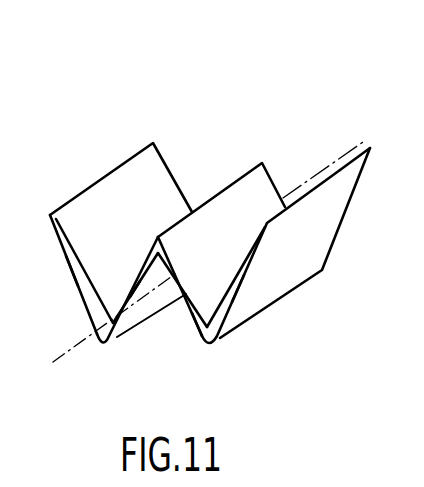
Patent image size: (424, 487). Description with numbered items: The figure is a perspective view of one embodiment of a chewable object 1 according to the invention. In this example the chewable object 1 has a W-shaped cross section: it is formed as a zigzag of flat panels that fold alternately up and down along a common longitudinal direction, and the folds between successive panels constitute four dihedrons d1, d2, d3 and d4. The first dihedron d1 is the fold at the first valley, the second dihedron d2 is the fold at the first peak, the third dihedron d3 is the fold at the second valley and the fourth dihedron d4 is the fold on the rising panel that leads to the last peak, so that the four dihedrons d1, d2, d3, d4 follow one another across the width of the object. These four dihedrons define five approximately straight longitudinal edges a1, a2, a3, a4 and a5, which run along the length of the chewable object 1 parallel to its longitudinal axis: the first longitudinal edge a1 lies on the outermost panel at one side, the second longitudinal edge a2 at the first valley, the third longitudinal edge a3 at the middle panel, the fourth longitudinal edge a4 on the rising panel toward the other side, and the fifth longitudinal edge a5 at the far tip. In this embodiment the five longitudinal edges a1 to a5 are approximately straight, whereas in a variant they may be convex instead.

The chewable object 1 is at (253, 88).
The longitudinal edge a1 is at (113, 171).
The longitudinal edge a2 is at (108, 346).
The longitudinal edge a3 is at (232, 184).
The longitudinal edge a4 is at (298, 287).
The longitudinal edge a5 is at (370, 147).
The dihedron d1 is at (73, 274).
The dihedron d2 is at (143, 291).
The dihedron d3 is at (186, 327).
The dihedron d4 is at (246, 291).